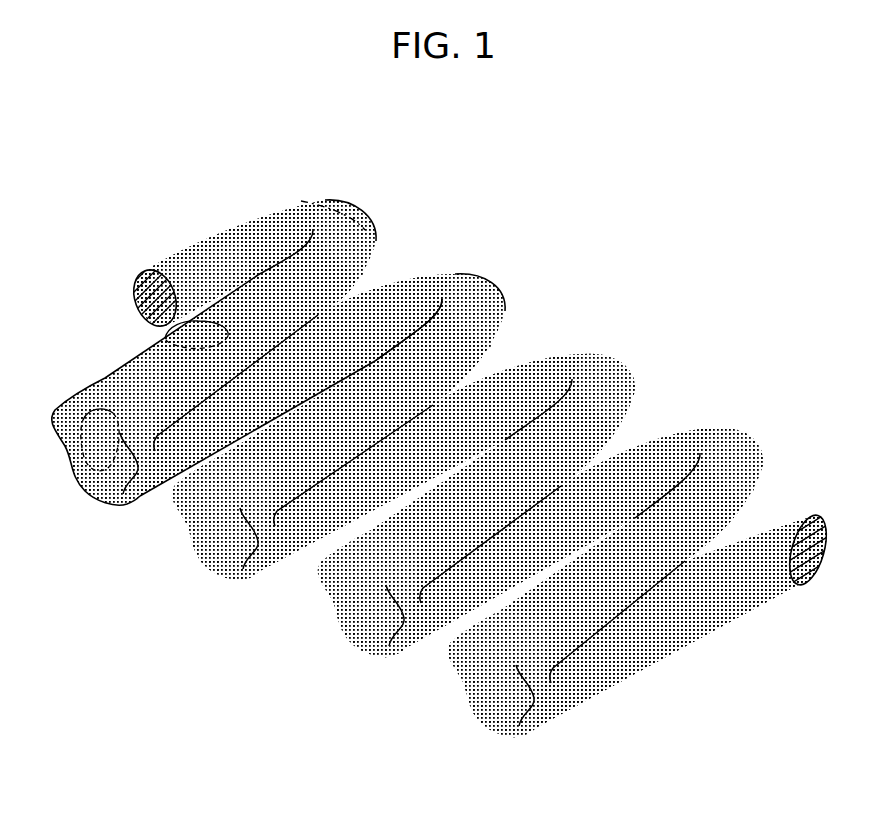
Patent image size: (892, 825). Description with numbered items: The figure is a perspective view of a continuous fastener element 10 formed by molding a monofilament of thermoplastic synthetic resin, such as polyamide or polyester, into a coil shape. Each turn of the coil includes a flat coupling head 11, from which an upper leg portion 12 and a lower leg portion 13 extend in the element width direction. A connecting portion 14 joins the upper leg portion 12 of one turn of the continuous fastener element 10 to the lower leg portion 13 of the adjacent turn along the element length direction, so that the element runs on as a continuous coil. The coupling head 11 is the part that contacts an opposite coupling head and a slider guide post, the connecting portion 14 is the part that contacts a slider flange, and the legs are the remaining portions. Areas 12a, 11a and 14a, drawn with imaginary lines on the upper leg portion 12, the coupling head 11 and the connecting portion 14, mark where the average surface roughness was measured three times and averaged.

The continuous fastener element 10 is at (513, 154).
The coupling head 11 is at (68, 482).
The area on the coupling head 11a is at (67, 390).
The upper leg portion 12 is at (138, 356).
The area on the upper leg portion 12a is at (150, 323).
The lower leg portion 13 is at (173, 457).
The connecting portion 14 is at (465, 280).
The area on the connecting portion 14a is at (293, 193).